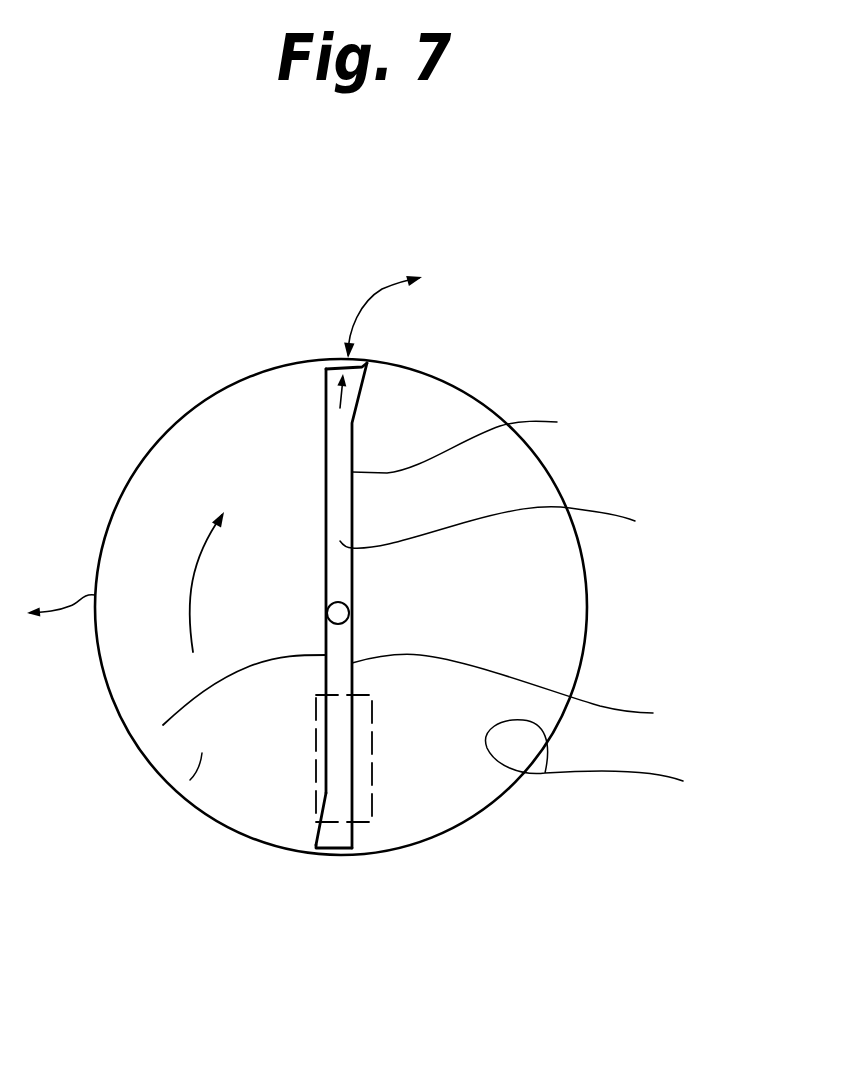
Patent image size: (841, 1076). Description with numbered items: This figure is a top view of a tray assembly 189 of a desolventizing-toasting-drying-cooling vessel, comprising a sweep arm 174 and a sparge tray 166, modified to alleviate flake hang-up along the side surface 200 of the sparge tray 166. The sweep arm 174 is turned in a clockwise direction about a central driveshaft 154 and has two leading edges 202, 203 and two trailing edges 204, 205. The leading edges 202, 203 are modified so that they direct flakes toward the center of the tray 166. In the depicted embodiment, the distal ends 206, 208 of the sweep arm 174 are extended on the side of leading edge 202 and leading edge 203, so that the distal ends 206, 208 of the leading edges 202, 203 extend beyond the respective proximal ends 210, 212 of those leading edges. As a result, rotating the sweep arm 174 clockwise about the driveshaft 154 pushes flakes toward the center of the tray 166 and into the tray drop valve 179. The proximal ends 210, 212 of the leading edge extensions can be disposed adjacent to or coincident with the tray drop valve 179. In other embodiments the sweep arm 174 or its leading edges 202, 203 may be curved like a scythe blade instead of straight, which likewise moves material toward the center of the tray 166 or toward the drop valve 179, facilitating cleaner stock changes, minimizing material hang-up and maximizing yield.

The tray assembly 189 is at (283, 298).
The trailing edge 204 is at (326, 454).
The distal end 206 is at (368, 362).
The proximal end 210 is at (356, 423).
The leading edge 202 is at (485, 443).
The sweep arm 174 is at (512, 529).
The driveshaft 154 is at (340, 612).
The trailing edge 205 is at (534, 693).
The side surface 200 is at (612, 764).
The leading edge 203 is at (163, 725).
The sparge tray 166 is at (190, 780).
The proximal end 212 is at (325, 793).
The distal end 208 is at (312, 852).
The tray drop valve 179 is at (352, 795).